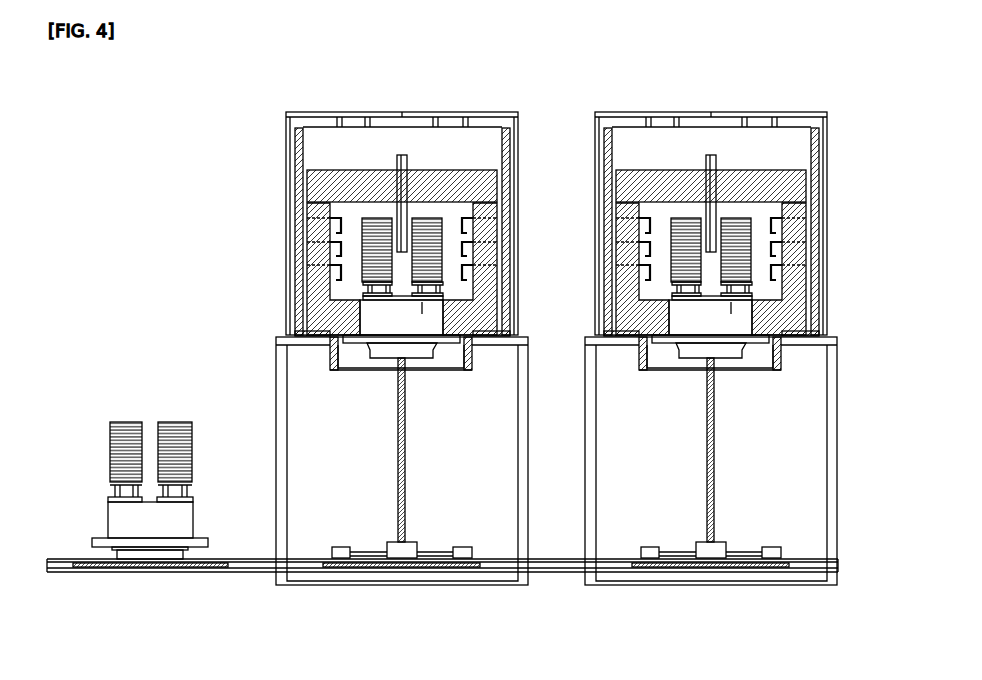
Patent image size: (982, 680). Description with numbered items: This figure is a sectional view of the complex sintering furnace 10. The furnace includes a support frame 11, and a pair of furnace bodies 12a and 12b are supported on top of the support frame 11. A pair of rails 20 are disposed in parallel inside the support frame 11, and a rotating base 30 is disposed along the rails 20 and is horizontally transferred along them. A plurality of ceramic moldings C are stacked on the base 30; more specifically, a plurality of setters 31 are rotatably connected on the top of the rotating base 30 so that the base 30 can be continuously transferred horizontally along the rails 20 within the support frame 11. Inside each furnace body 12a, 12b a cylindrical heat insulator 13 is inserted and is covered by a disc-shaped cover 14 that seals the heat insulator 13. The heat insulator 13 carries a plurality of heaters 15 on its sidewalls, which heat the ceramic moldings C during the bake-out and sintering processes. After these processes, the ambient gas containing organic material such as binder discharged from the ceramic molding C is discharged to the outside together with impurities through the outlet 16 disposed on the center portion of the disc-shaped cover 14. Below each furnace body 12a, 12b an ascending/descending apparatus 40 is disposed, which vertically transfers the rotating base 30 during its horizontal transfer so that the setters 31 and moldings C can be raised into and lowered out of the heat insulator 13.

The complex sintering furnace 10 is at (158, 203).
The support frame 11 is at (283, 365).
The furnace body 12a is at (480, 145).
The furnace body 12b is at (789, 145).
The heat insulator 13 is at (313, 253).
The disc-shaped cover 14 is at (355, 182).
The heater 15 is at (330, 210).
The outlet 16 is at (402, 153).
The rail 20 is at (248, 572).
The rotating base 30 is at (345, 320).
The setter 31 is at (363, 289).
The ascending/descending apparatus 40 is at (402, 560).
The ceramic molding C is at (433, 248).